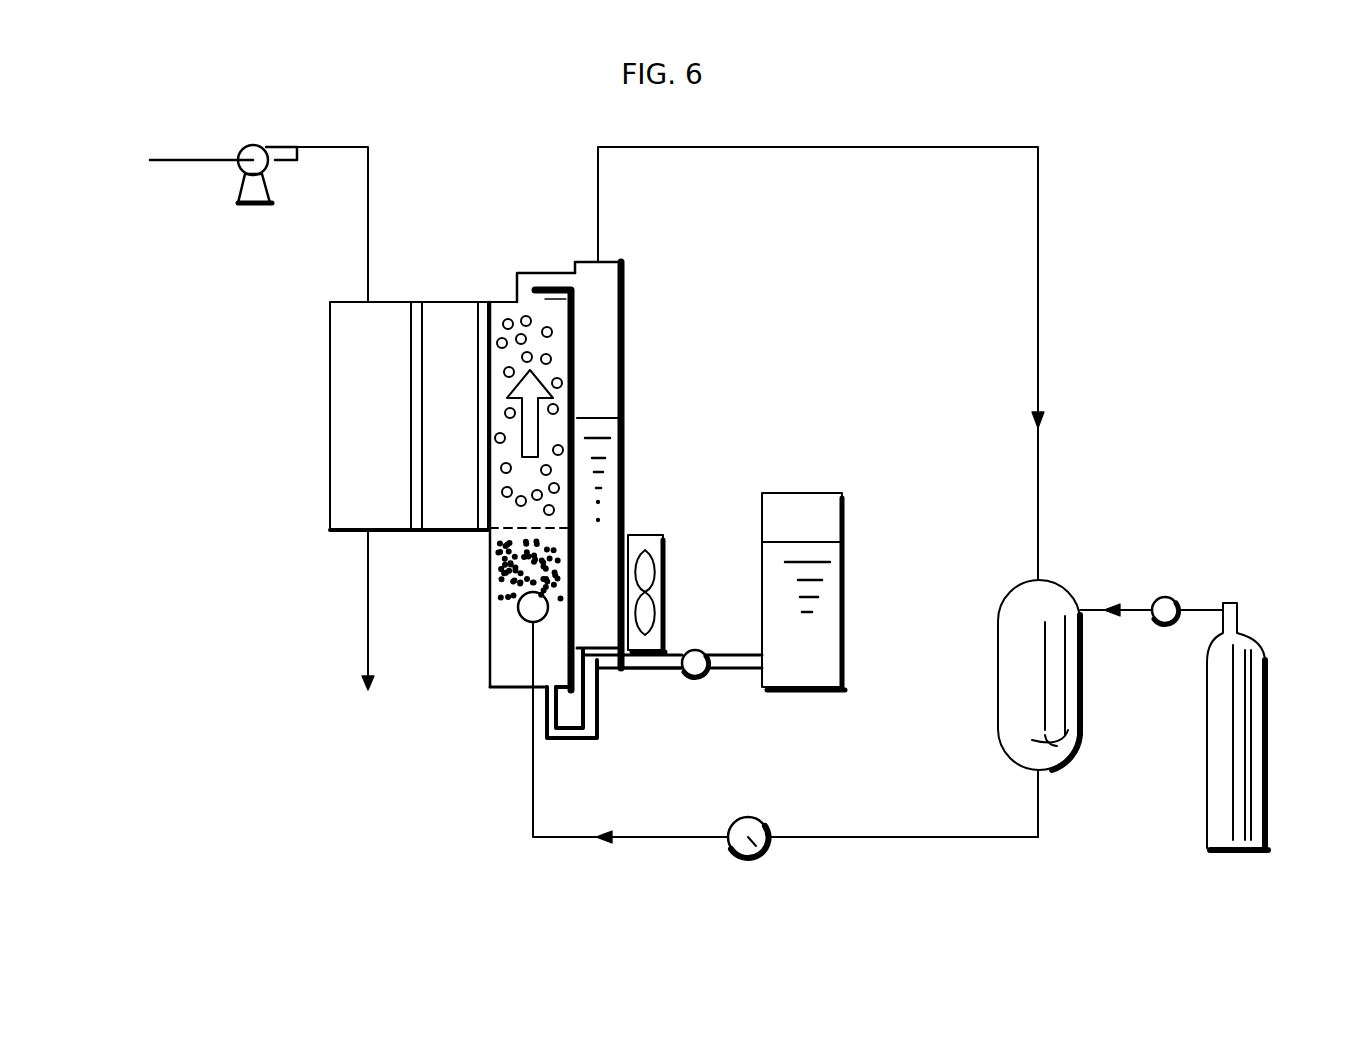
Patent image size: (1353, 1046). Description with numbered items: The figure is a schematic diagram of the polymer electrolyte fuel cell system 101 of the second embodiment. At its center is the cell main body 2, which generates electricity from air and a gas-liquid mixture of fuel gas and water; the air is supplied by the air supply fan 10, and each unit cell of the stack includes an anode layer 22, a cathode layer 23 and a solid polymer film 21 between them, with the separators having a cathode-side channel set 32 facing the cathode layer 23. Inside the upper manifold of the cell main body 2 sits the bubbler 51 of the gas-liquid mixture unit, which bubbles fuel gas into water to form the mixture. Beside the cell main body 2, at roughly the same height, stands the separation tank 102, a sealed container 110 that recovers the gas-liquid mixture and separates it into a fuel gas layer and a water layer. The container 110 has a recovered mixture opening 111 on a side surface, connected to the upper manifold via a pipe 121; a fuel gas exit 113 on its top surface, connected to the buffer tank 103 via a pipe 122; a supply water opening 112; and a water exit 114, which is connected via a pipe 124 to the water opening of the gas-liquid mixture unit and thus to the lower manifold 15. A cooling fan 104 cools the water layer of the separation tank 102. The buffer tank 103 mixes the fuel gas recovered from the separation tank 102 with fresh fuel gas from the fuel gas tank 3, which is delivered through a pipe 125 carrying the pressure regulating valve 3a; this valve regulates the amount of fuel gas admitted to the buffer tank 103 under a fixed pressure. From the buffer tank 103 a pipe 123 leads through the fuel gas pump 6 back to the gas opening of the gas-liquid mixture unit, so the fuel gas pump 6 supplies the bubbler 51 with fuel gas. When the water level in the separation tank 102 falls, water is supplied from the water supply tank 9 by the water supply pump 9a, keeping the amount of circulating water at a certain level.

The cell main body 2 is at (312, 371).
The fuel gas tank 3 is at (1240, 715).
The pressure regulating valve 3a is at (1168, 597).
The fuel gas pump 6 is at (763, 858).
The water supply tank 9 is at (823, 628).
The water supply pump 9a is at (697, 680).
The air supply fan 10 is at (260, 144).
The lower manifold 15 is at (493, 682).
The solid polymer film 21 is at (447, 518).
The anode layer 22 is at (483, 540).
The cathode layer 23 is at (407, 540).
The cathode-side channel set 32 is at (362, 444).
The bubbler 51 is at (518, 618).
The polymer electrolyte fuel cell system 101 is at (1085, 164).
The separation tank 102 is at (625, 355).
The buffer tank 103 is at (1063, 703).
The cooling fan 104 is at (672, 562).
The sealed container 110 is at (628, 305).
The recovered mixture opening 111 is at (570, 272).
The supply water opening 112 is at (536, 696).
The fuel gas exit 113 is at (600, 260).
The water exit 114 is at (600, 658).
The pipe 121 is at (521, 278).
The pipe 122 is at (785, 146).
The pipe 123 is at (643, 840).
The pipe 124 is at (577, 738).
The pipe 125 is at (1105, 608).